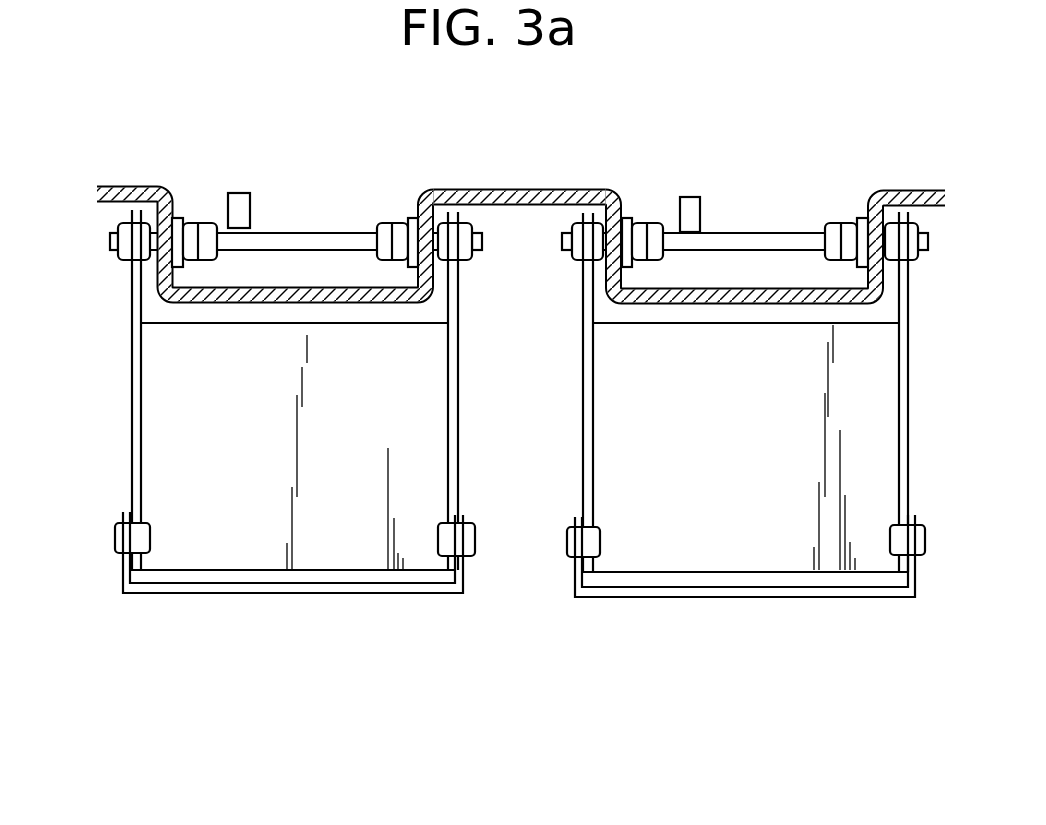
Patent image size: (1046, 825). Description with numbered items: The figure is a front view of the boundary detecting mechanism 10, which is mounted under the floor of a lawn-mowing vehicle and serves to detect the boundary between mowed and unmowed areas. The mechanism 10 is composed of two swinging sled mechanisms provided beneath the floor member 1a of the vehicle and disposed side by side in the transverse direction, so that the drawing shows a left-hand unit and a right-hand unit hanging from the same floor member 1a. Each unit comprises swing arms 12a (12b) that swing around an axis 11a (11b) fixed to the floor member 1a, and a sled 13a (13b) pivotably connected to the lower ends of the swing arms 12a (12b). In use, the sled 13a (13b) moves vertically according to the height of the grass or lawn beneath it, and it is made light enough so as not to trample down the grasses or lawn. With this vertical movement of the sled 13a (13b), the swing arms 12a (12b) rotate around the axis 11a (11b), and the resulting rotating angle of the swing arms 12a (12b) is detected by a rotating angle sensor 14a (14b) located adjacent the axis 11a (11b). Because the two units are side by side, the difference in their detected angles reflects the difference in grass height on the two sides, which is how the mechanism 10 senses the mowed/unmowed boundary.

The boundary detecting mechanism 10 is at (604, 168).
The floor member 1a is at (515, 190).
The axis 11a is at (328, 234).
The axis 11b is at (750, 236).
The swing arms 12a is at (130, 370).
The swing arms 12b is at (582, 368).
The sled 13a is at (313, 596).
The sled 13b is at (768, 600).
The rotating angle sensor 14a is at (242, 192).
The rotating angle sensor 14b is at (695, 196).